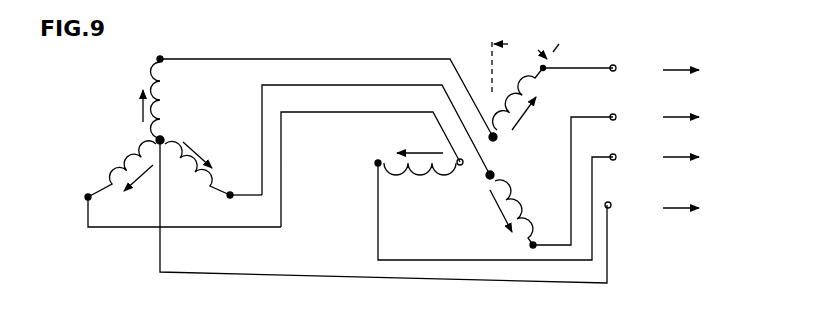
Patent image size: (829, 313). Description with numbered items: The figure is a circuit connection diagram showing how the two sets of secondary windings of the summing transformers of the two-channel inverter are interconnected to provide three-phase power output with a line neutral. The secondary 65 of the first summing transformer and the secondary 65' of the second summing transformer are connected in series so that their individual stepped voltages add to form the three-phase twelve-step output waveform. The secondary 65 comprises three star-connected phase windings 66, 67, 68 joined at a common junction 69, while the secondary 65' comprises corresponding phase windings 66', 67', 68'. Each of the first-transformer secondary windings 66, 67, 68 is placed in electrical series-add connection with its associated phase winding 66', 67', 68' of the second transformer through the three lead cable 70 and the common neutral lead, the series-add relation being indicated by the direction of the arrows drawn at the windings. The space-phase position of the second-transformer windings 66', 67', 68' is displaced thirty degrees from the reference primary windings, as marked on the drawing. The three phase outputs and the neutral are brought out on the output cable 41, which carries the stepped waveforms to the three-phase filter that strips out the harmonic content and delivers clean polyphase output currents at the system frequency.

The output cable 41 is at (713, 45).
The secondary of summing transformer ST-1 65 is at (155, 132).
The secondary winding of ST-1 66 is at (167, 100).
The secondary winding of ST-1 67 is at (122, 169).
The secondary winding of ST-1 68 is at (197, 176).
The neutral junction 69 is at (171, 130).
The three lead cable 70 is at (330, 61).
The secondary of summing transformer ST-2 65' is at (467, 143).
The secondary winding of ST-2 66' is at (535, 99).
The secondary winding of ST-2 67' is at (420, 150).
The secondary winding of ST-2 68' is at (518, 207).